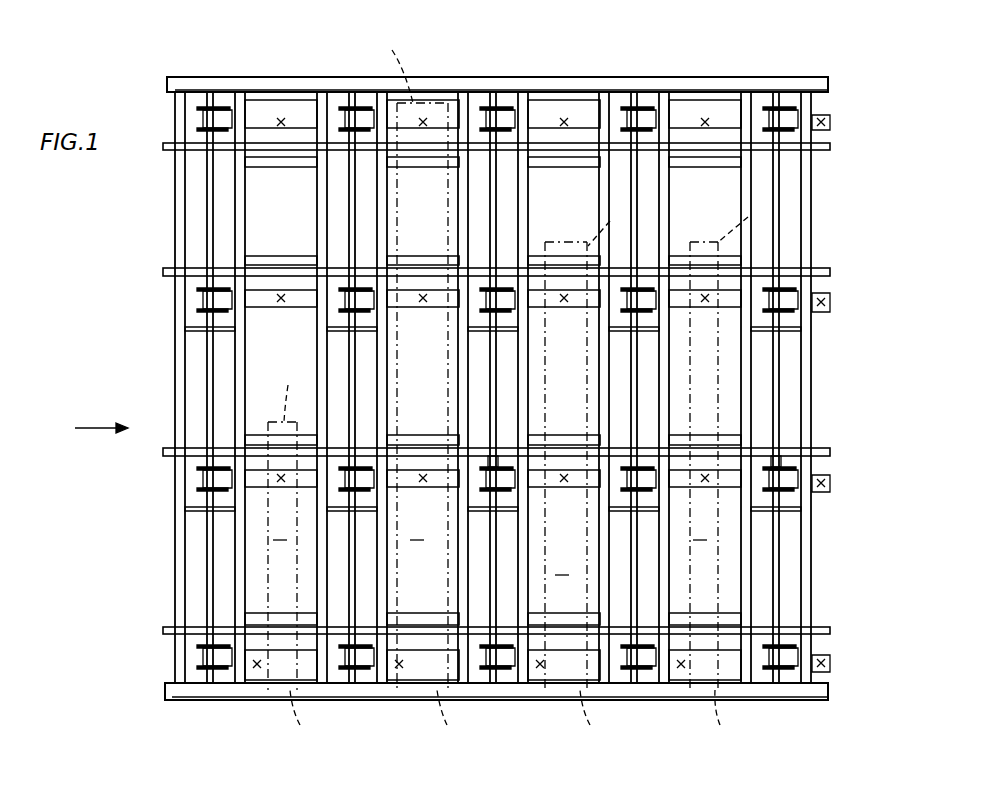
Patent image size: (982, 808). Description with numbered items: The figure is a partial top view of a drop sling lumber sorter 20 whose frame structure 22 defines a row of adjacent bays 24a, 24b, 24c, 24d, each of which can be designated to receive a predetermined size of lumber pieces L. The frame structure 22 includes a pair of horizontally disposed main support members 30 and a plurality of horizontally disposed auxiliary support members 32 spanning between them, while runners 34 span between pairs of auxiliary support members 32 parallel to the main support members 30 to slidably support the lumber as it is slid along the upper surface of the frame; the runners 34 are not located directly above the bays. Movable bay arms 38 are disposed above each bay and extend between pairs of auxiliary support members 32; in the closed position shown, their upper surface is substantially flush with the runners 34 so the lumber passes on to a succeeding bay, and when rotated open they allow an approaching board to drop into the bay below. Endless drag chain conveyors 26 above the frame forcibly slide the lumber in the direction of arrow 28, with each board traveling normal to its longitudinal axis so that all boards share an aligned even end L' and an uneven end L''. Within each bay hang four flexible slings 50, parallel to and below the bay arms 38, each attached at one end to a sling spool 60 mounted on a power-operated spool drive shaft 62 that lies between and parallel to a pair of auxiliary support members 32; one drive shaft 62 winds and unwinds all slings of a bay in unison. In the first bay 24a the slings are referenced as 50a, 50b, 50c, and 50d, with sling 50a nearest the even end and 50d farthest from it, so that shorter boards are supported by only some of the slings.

The drop sling lumber sorter 20 is at (112, 371).
The frame structure 22 is at (252, 707).
The first bay 24a is at (302, 358).
The second bay 24b is at (443, 245).
The third bay 24c is at (588, 360).
The fourth bay 24d is at (723, 233).
The endless drag chain conveyors 26 is at (163, 150).
The arrow 28 is at (97, 431).
The main support members 30 is at (438, 78).
The auxiliary support members 32 is at (806, 578).
The runners 34 is at (185, 328).
The bay arms 38 is at (286, 167).
The flexible slings 50 is at (832, 122).
The first sling 50a is at (197, 660).
The second sling 50b is at (200, 480).
The third sling 50c is at (198, 300).
The fourth sling 50d is at (198, 120).
The sling spool 60 is at (795, 468).
The spool drive shaft 62 is at (208, 540).